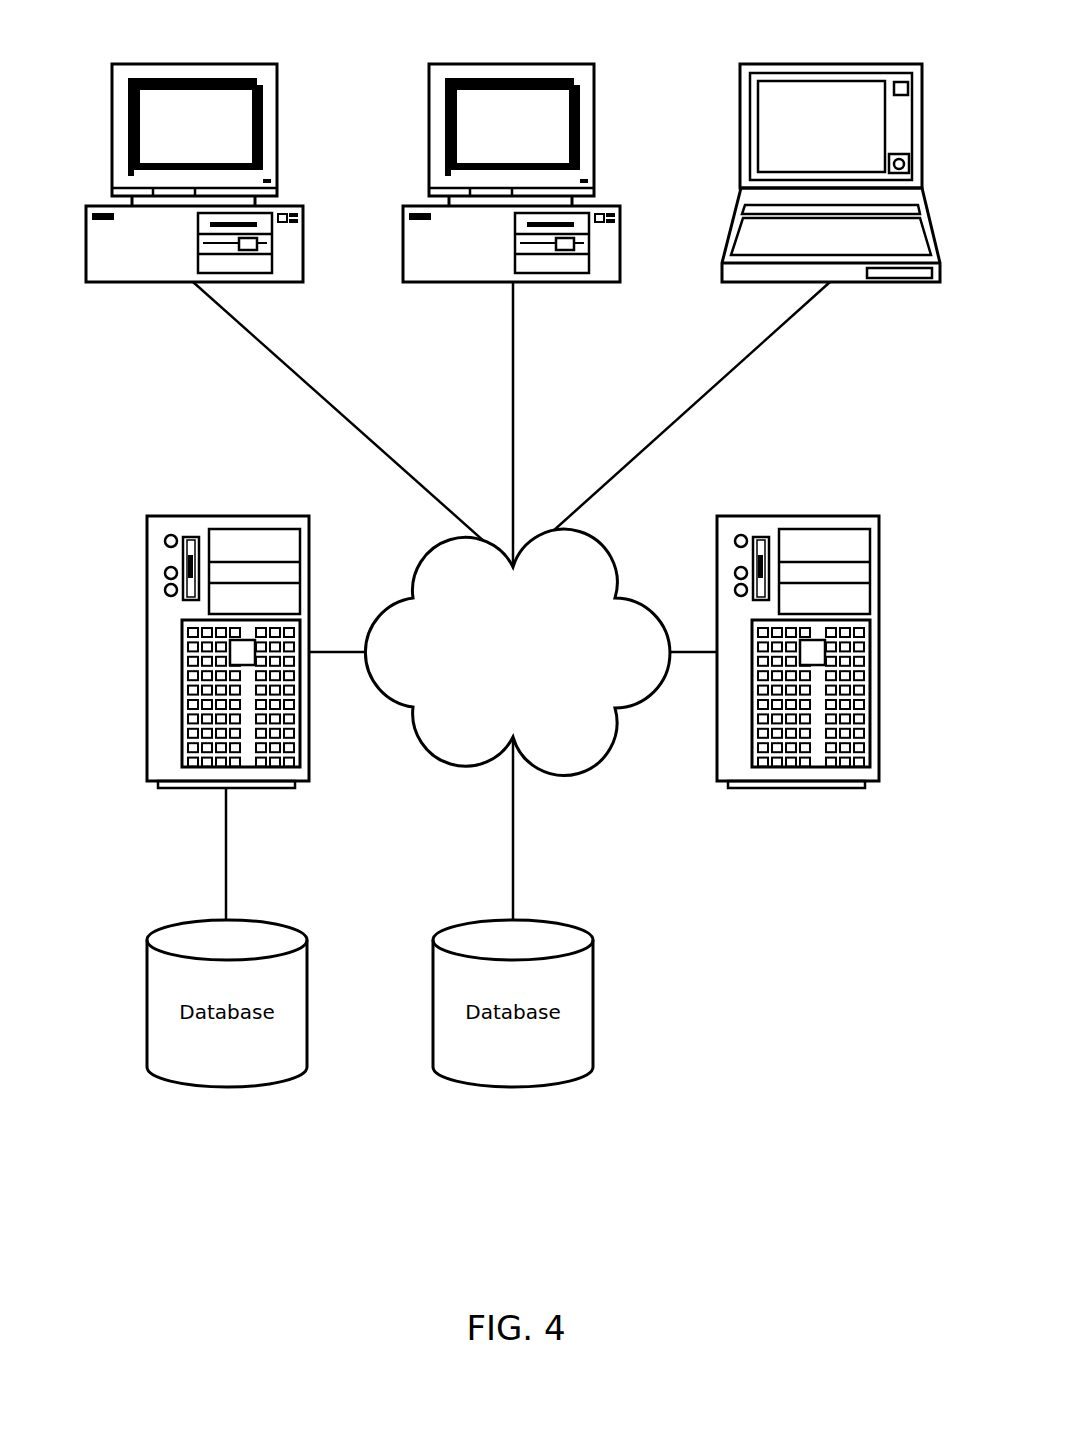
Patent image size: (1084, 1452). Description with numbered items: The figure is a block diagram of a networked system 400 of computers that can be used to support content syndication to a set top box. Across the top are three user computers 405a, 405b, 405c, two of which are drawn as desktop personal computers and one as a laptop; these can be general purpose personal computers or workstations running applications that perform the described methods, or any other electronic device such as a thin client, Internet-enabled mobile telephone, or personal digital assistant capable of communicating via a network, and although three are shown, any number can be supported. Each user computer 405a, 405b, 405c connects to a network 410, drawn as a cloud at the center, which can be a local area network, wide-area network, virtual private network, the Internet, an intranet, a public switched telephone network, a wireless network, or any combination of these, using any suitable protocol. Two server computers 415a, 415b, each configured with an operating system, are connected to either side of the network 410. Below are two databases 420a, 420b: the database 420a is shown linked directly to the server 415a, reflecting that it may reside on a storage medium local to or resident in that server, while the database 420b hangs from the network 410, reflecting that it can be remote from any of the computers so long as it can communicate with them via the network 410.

The system 400 is at (513, 598).
The user computer 405a is at (303, 228).
The user computer 405b is at (403, 228).
The user computer 405c is at (740, 172).
The network 410 is at (550, 762).
The server computer 415a is at (147, 652).
The server computer 415b is at (881, 653).
The database 420a is at (227, 1087).
The database 420b is at (513, 1087).